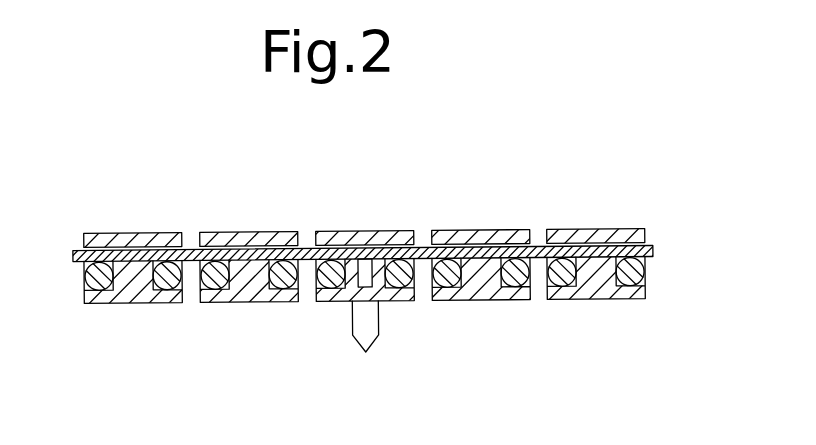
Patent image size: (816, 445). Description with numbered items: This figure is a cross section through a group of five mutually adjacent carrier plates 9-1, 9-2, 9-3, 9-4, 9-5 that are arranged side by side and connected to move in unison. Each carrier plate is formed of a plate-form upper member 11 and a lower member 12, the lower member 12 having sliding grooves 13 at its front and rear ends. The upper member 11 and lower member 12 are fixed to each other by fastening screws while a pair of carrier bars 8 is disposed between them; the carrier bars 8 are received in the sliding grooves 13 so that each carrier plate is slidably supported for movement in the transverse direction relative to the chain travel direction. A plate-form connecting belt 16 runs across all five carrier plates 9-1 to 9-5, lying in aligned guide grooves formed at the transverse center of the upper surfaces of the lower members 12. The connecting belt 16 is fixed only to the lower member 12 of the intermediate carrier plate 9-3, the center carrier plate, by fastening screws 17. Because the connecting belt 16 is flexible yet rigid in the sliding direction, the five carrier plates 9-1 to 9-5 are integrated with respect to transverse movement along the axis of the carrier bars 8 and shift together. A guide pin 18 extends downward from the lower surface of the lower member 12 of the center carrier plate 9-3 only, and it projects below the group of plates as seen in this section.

The carrier plate 9-5 is at (138, 231).
The carrier plate 9-4 is at (258, 231).
The carrier plate 9-3 is at (375, 231).
The carrier plate 9-2 is at (486, 231).
The carrier plate 9-1 is at (590, 231).
The upper member 11 is at (640, 231).
The connecting belt 16 is at (654, 254).
The carrier bar 8 is at (633, 277).
The sliding groove 13 is at (568, 284).
The lower member 12 is at (600, 293).
The fastening screw 17 is at (371, 288).
The guide pin 18 is at (362, 331).